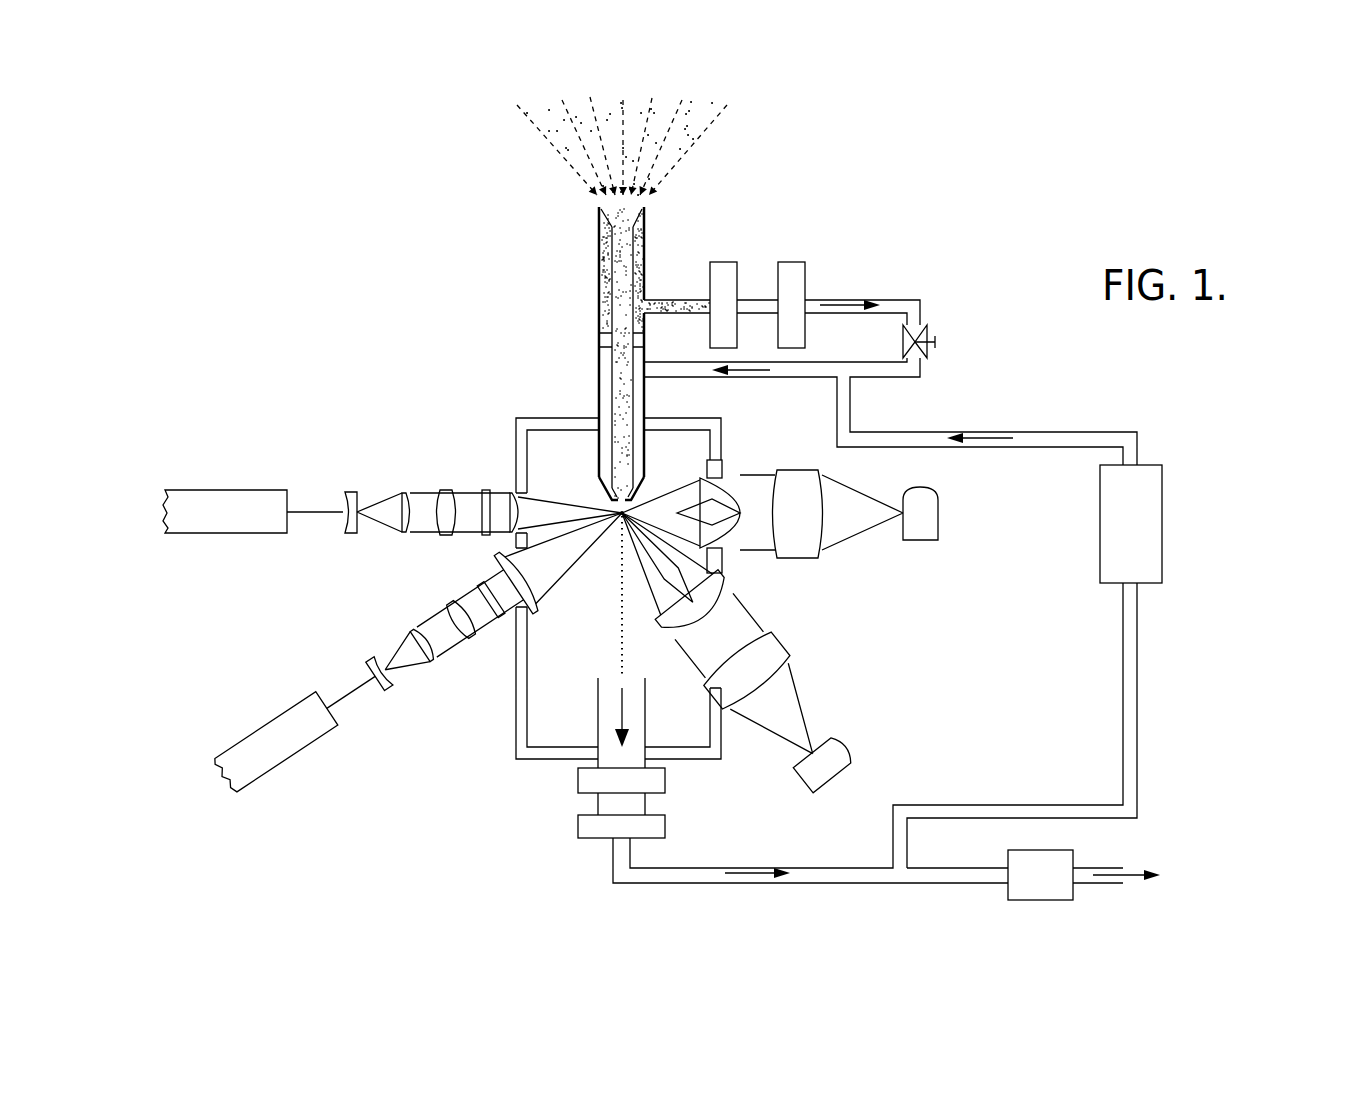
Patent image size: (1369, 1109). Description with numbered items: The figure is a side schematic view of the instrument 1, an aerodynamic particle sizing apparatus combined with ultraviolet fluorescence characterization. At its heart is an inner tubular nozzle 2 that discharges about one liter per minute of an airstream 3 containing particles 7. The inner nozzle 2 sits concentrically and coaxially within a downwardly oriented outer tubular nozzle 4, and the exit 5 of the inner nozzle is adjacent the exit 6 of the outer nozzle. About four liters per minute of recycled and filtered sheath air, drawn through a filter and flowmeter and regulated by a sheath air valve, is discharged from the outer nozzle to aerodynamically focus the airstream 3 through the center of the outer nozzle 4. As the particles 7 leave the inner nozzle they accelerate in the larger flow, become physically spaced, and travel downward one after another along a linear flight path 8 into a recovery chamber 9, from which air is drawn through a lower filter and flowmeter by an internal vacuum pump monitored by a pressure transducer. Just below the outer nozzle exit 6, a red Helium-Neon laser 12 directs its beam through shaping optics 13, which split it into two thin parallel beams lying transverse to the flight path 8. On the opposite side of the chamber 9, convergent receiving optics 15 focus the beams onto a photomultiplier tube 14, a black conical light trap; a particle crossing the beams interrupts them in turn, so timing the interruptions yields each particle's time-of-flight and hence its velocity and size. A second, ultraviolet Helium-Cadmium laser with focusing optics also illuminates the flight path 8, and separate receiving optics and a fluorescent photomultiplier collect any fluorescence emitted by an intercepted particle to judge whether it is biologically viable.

The instrument 1 is at (440, 396).
The inner tubular nozzle 2 is at (610, 412).
The airstream 3 is at (583, 173).
The outer tubular nozzle 4 is at (598, 373).
The exit of the inner nozzle 5 is at (612, 490).
The exit of the outer nozzle 6 is at (610, 508).
The particles 7 is at (582, 155).
The flight path 8 is at (618, 570).
The recovery chamber 9 is at (515, 700).
The Helium-Neon laser 12 is at (230, 500).
The optics 13 is at (421, 522).
The photomultiplier tube (APS PMT) 14 is at (940, 523).
The convergent receiving optics 15 is at (808, 565).